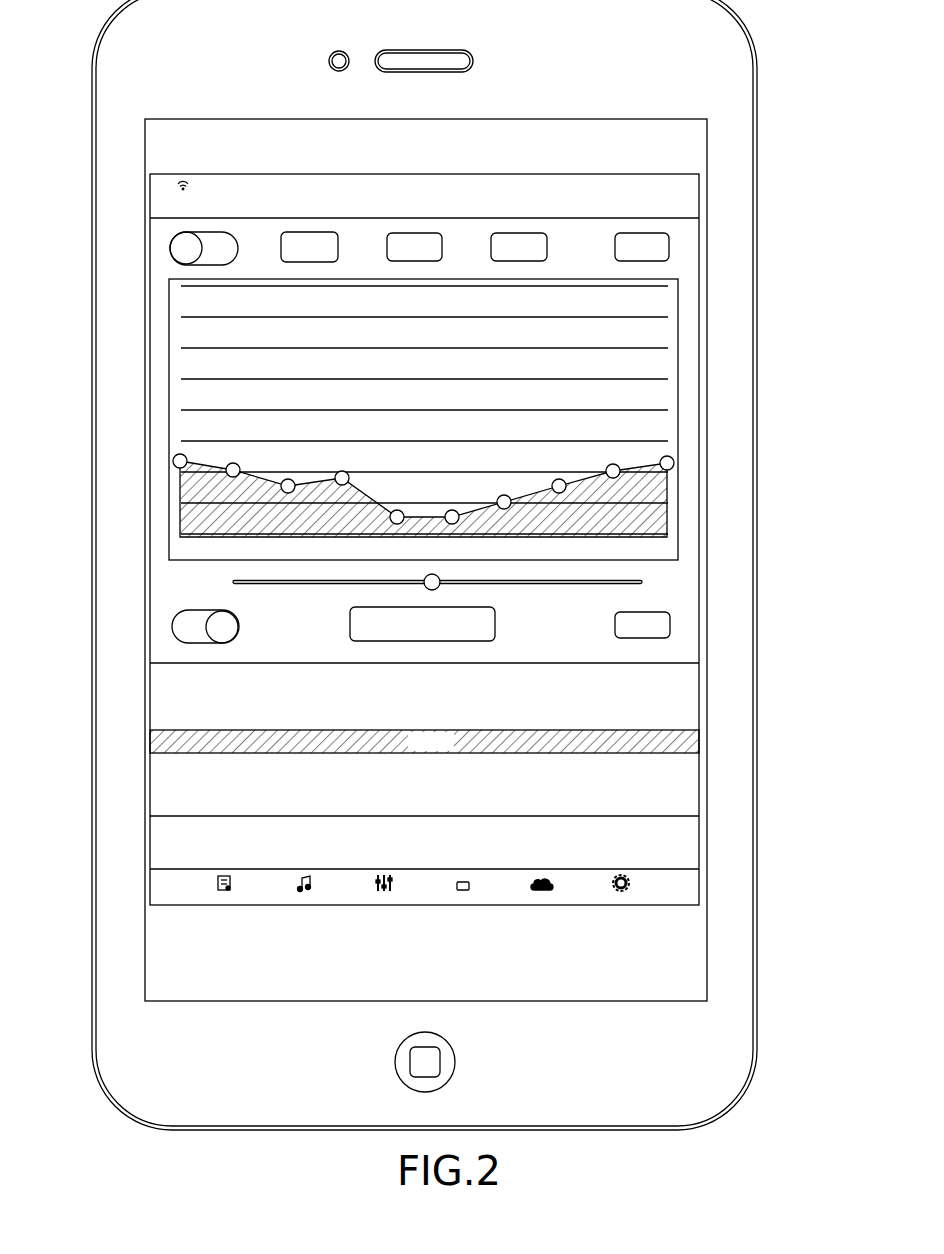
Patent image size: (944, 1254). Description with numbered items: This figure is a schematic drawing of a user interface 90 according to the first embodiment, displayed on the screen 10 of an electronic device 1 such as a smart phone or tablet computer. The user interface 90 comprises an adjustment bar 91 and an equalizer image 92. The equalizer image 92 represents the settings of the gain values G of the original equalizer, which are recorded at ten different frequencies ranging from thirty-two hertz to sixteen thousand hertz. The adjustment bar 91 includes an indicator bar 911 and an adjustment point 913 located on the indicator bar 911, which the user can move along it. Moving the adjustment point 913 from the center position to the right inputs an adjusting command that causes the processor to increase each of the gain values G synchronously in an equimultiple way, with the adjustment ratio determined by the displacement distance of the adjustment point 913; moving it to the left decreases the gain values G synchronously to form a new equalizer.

The electronic device 1 is at (730, 10).
The screen 10 is at (697, 143).
The user interface 90 is at (421, 539).
The gain values G is at (175, 456).
The equalizer image 92 is at (657, 497).
The adjustment bar 91 is at (476, 606).
The indicator bar 911 is at (502, 582).
The adjustment point 913 is at (425, 588).